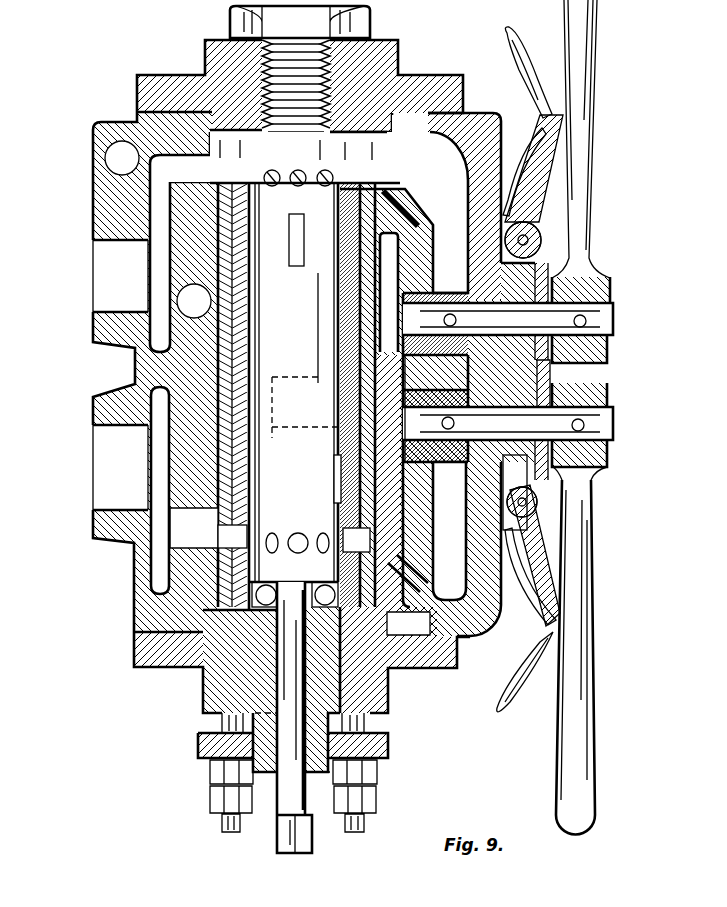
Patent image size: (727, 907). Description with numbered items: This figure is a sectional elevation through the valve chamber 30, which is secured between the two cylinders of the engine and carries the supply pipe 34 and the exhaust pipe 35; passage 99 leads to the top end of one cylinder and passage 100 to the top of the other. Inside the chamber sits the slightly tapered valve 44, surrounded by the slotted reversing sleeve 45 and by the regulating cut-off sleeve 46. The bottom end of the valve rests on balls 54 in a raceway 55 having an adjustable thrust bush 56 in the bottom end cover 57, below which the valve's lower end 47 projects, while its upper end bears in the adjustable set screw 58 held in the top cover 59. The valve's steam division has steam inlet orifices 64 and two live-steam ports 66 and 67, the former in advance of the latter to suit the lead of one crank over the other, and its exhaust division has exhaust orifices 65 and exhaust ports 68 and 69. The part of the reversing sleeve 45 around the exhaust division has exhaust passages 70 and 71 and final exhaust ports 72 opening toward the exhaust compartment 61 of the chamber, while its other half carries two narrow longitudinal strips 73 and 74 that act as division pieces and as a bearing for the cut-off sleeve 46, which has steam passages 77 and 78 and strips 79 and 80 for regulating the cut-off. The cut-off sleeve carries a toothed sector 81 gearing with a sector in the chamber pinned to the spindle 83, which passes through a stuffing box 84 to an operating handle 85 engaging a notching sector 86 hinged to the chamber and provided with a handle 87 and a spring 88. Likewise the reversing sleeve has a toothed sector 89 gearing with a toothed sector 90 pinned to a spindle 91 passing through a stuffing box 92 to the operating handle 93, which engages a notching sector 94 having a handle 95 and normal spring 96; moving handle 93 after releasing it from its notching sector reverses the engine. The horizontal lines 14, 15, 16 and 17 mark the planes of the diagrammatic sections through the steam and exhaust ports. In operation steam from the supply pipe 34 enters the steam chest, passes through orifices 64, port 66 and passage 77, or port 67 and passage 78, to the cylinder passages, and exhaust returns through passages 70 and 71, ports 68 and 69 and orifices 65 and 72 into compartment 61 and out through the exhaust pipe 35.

The section line 14 is at (318, 237).
The section line 15 is at (318, 322).
The section line 16 is at (318, 410).
The section line 17 is at (318, 488).
The valve chamber 30 is at (122, 120).
The supply pipe 34 is at (120, 276).
The exhaust pipe 35 is at (120, 467).
The valve 44 is at (302, 328).
The reversing sleeve 45 is at (250, 462).
The cut-off sleeve 46 is at (250, 359).
The actuating rod 47 is at (276, 845).
The balls 54 is at (294, 570).
The raceway 55 is at (316, 570).
The adjustable thrust bush 56 is at (257, 667).
The bottom end cover 57 is at (388, 693).
The adjustable set screw 58 is at (305, 156).
The top cover 59 is at (372, 46).
The exhaust compartment 61 is at (449, 531).
The steam inlet orifices 64 is at (326, 163).
The exhaust orifices 65 is at (299, 532).
The live-steam port 66 is at (289, 249).
The live-steam port 67 is at (250, 333).
The exhaust port 68 is at (280, 396).
The exhaust port 69 is at (333, 469).
The exhaust passage 70 is at (250, 391).
The exhaust passage 71 is at (250, 500).
The final exhaust ports 72 is at (294, 538).
The longitudinal strip 73 is at (249, 229).
The longitudinal strip 74 is at (338, 203).
The steam passage 77 is at (250, 290).
The steam passage 78 is at (340, 340).
The strip 79 is at (250, 203).
The strip 80 is at (352, 250).
The toothed sector 81 is at (400, 198).
The spindle 83 is at (508, 320).
The stuffing box 84 is at (534, 274).
The operating handle 85 is at (590, 22).
The notching sector 86 is at (533, 196).
The handle 87 is at (520, 52).
The spring 88 is at (527, 163).
The toothed sector 89 is at (410, 590).
The toothed sector 90 is at (425, 514).
The spindle 91 is at (508, 431).
The stuffing box 92 is at (550, 390).
The operating handle 93 is at (580, 755).
The notching sector 94 is at (533, 553).
The handle 95 is at (510, 698).
The normal spring 96 is at (523, 597).
The passage 99 is at (122, 158).
The passage 100 is at (194, 301).